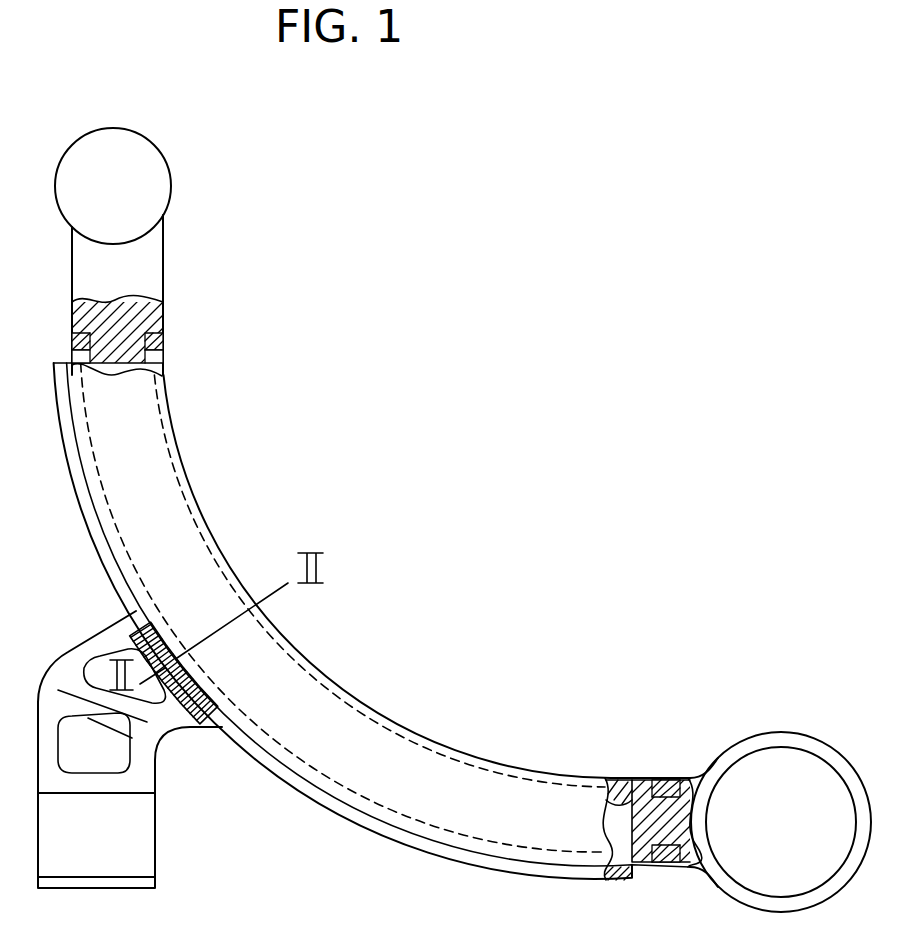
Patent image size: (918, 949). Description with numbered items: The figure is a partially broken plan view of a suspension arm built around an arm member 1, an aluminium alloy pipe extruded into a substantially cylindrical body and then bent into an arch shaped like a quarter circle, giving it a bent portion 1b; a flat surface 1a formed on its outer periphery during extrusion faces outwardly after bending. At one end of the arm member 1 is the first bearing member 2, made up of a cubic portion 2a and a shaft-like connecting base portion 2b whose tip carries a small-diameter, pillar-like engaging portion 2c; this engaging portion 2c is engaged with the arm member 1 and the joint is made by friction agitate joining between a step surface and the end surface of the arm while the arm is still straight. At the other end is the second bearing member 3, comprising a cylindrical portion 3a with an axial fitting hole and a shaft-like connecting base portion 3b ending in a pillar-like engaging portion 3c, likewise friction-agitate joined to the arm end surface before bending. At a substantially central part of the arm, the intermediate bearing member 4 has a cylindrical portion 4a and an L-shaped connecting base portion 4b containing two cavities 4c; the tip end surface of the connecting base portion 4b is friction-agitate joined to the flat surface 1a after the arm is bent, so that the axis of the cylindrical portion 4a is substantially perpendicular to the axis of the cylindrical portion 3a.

The arm member 1 is at (372, 626).
The flat surface 1a is at (345, 813).
The bent portion 1b is at (408, 728).
The first bearing member 2 is at (163, 253).
The cubic portion 2a is at (135, 148).
The connecting base portion 2b is at (147, 272).
The engaging portion 2c is at (153, 375).
The second bearing member 3 is at (730, 773).
The cylindrical portion 3a is at (792, 737).
The connecting base portion 3b is at (680, 783).
The engaging portion 3c is at (623, 783).
The intermediate bearing member 4 is at (141, 738).
The cylindrical portion 4a is at (135, 850).
The connecting base portion 4b is at (147, 735).
The cavities 4c is at (88, 736).